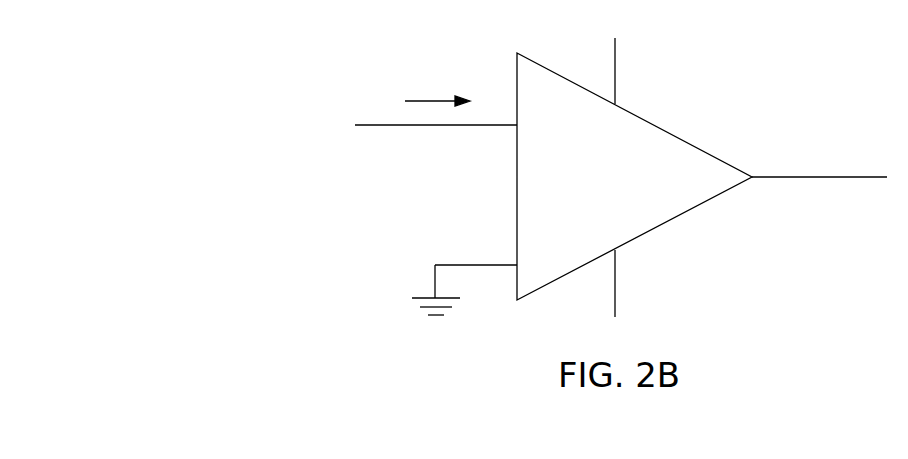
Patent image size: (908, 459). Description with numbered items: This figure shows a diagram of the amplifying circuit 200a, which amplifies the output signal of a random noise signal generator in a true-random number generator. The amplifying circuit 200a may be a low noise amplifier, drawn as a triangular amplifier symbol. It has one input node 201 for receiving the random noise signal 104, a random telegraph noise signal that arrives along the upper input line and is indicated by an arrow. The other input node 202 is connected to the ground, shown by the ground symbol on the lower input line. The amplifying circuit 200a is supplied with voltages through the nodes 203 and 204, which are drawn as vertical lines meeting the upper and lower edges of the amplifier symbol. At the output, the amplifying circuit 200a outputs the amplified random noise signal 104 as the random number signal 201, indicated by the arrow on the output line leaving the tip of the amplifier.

The amplifying circuit 200a is at (240, 65).
The input node 201 is at (425, 125).
The random noise signal 104 is at (428, 100).
The input node 202 is at (453, 265).
The node 203 is at (615, 50).
The node 204 is at (615, 280).